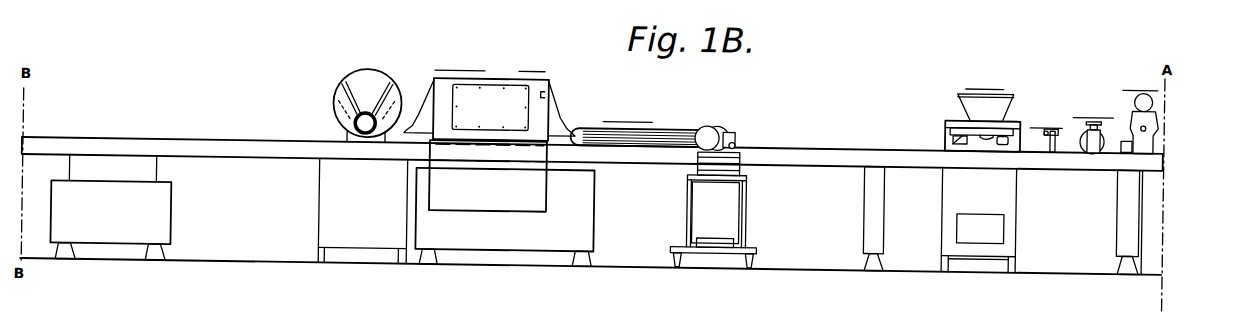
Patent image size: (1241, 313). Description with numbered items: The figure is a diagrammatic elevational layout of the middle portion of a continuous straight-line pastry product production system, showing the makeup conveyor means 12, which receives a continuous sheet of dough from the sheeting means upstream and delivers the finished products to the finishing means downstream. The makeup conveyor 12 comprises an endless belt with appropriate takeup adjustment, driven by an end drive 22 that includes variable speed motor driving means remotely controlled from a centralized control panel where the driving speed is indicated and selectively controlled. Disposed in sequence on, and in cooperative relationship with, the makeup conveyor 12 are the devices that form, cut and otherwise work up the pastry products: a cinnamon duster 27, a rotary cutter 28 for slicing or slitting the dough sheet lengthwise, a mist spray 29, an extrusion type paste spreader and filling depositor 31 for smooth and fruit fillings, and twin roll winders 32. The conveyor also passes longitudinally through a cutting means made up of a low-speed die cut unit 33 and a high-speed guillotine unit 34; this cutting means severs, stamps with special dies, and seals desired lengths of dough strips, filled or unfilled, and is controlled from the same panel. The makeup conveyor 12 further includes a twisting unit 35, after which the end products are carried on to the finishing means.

The makeup conveyor means 12 is at (833, 135).
The end drive 22 is at (113, 187).
The cinnamon duster 27 is at (1151, 85).
The rotary cutter 28 is at (1107, 137).
The mist spray 29 is at (1047, 130).
The extrusion type paste spreader and filling depositor 31 is at (947, 107).
The twin roll winders 32 is at (692, 118).
The die cut unit 33 is at (563, 79).
The guillotine unit 34 is at (426, 76).
The twisting unit 35 is at (337, 91).